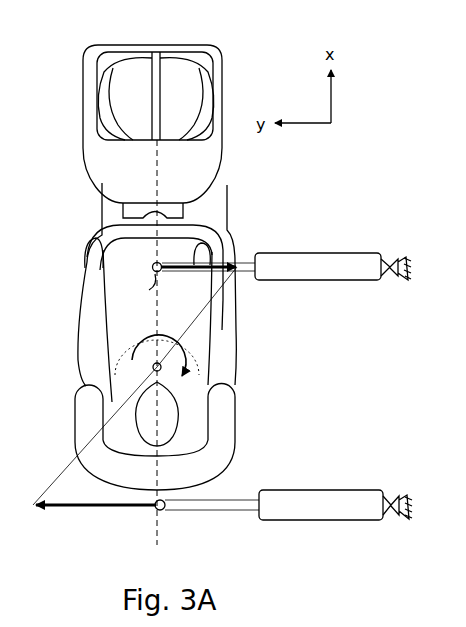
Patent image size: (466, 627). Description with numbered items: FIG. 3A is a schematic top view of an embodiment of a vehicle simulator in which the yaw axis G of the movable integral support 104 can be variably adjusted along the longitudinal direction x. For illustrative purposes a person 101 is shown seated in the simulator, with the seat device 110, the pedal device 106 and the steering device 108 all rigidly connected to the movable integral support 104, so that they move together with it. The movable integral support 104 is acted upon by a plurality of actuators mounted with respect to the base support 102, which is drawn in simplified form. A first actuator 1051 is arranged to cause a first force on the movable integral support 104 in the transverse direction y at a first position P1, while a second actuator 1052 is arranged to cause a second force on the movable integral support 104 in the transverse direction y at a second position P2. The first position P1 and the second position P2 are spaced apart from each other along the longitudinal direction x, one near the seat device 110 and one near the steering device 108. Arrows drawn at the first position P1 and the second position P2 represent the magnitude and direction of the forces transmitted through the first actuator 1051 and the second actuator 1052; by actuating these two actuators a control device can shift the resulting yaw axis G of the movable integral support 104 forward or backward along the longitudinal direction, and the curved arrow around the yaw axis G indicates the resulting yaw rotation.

The person 101 is at (228, 357).
The base support 102 is at (407, 258).
The movable integral support 104 is at (212, 244).
The pedal device 106 is at (187, 63).
The steering device 108 is at (180, 236).
The seat device 110 is at (228, 435).
The first actuator 1051 is at (340, 484).
The second actuator 1052 is at (352, 253).
The yaw axis G is at (157, 367).
The first position P1 is at (157, 507).
The second position P2 is at (155, 270).